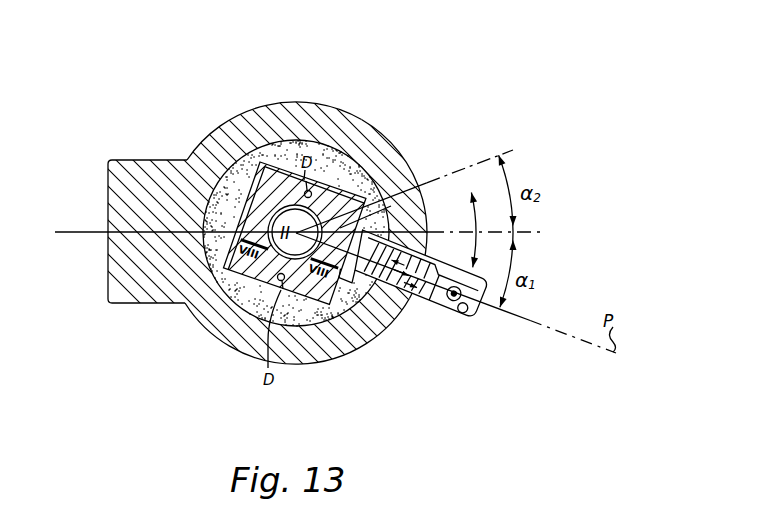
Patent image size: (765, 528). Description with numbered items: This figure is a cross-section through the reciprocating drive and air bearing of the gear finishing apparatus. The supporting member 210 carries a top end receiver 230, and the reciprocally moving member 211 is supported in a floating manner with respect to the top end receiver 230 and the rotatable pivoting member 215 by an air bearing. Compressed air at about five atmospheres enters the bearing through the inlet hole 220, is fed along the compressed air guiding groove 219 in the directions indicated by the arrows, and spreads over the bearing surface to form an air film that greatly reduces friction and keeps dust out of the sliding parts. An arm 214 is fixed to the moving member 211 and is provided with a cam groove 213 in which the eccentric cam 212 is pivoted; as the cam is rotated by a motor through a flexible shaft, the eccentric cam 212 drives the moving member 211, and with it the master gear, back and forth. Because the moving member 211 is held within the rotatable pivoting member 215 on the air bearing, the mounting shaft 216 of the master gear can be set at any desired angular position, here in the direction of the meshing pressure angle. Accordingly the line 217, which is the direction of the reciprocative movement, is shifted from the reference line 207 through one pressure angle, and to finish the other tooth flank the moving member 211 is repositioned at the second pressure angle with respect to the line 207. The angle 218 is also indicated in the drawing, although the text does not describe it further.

The line 207 is at (528, 232).
The supporting member 210 is at (148, 170).
The reciprocally moving member 211 is at (268, 170).
The eccentric cam 212 is at (455, 300).
The cam groove 213 is at (467, 312).
The arm 214 is at (413, 310).
The rotatable pivoting member 215 is at (392, 150).
The mounting shaft 216 is at (350, 114).
The line 217 is at (517, 317).
The upper limit line 218 is at (493, 153).
The compressed air guiding groove 219 is at (323, 362).
The inlet hole 220 is at (285, 278).
The top end receiver 230 is at (320, 104).